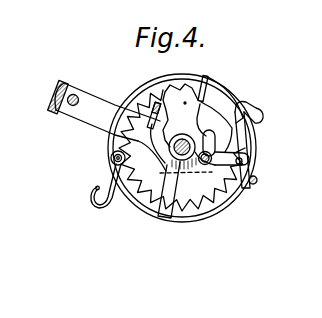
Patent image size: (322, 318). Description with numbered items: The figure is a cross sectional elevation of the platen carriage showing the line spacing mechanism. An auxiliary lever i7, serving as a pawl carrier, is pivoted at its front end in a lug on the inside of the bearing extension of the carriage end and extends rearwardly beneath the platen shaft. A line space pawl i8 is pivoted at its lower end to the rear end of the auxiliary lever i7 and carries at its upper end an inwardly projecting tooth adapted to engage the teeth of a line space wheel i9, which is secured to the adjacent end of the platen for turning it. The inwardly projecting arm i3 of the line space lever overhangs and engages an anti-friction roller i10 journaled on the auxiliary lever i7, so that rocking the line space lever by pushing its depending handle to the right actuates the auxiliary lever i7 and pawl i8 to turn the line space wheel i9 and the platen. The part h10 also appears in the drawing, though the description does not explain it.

The lever arm i7 is at (96, 114).
The lever tail arm i10 is at (152, 118).
The pin i3 is at (158, 103).
The pawl i9 is at (189, 121).
The spring h10 is at (232, 93).
The release lever i8 is at (244, 137).